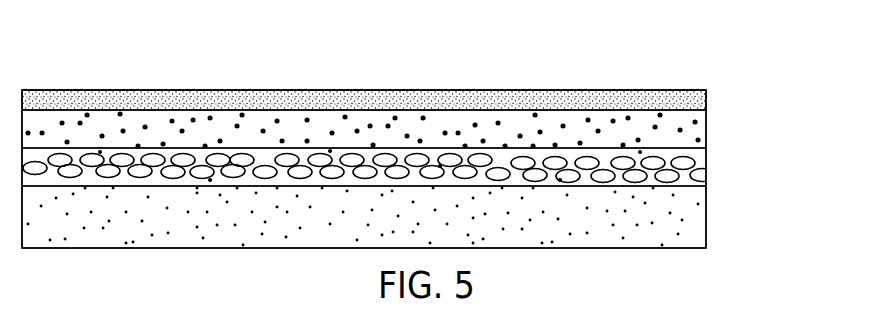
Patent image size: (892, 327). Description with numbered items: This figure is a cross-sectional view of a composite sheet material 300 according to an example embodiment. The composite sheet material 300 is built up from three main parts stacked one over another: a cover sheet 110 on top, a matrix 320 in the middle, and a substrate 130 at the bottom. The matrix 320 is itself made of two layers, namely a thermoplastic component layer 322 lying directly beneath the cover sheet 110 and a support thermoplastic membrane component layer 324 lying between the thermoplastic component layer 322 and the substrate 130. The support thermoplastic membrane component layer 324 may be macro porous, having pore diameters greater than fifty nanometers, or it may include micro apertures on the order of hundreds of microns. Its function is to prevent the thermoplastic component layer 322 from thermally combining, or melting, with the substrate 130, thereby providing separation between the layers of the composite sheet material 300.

The composite sheet material 300 is at (84, 69).
The cover sheet 110 is at (732, 98).
The matrix 320 is at (441, 147).
The thermoplastic component layer 322 is at (732, 133).
The support thermoplastic membrane component layer 324 is at (732, 165).
The substrate 130 is at (730, 235).